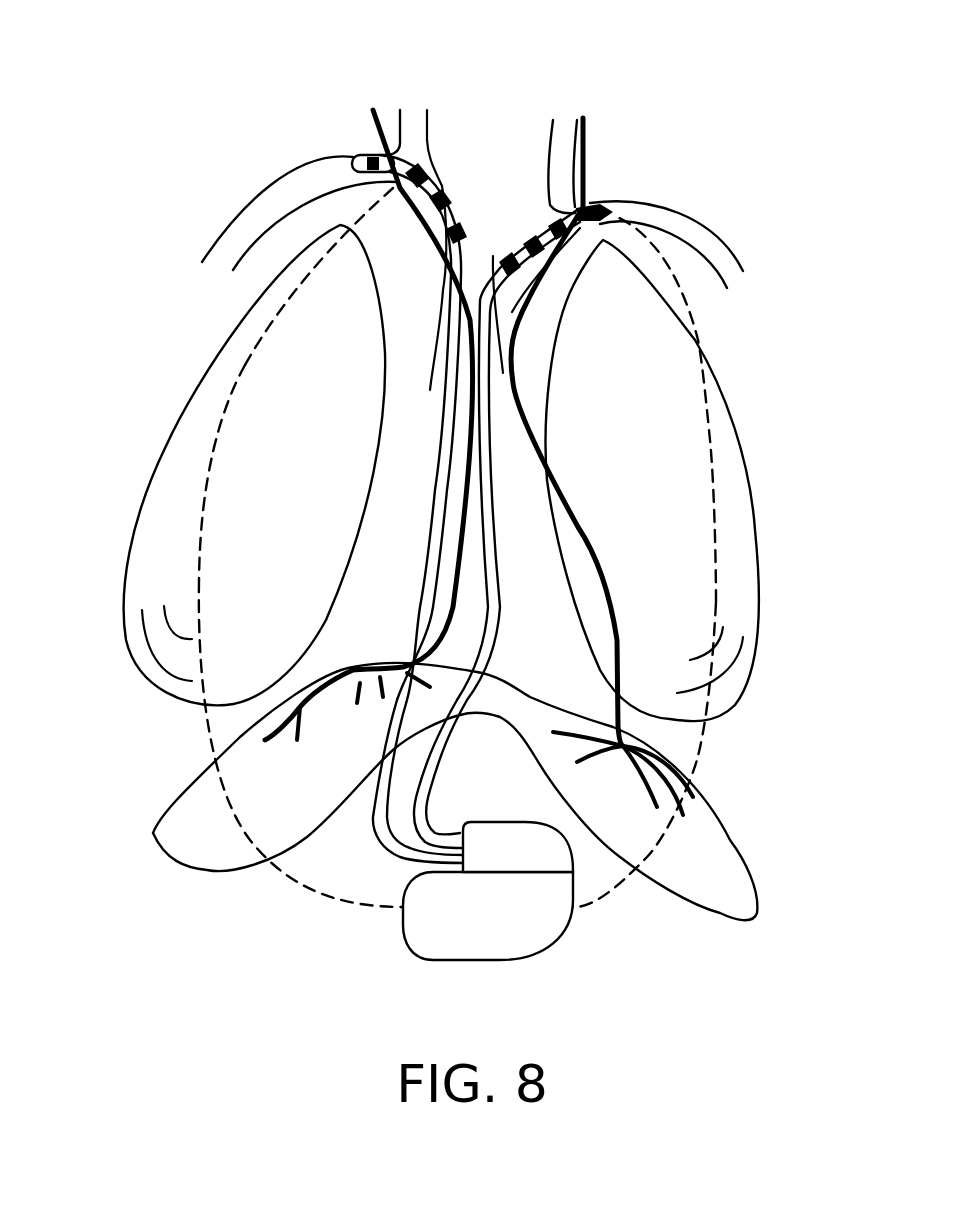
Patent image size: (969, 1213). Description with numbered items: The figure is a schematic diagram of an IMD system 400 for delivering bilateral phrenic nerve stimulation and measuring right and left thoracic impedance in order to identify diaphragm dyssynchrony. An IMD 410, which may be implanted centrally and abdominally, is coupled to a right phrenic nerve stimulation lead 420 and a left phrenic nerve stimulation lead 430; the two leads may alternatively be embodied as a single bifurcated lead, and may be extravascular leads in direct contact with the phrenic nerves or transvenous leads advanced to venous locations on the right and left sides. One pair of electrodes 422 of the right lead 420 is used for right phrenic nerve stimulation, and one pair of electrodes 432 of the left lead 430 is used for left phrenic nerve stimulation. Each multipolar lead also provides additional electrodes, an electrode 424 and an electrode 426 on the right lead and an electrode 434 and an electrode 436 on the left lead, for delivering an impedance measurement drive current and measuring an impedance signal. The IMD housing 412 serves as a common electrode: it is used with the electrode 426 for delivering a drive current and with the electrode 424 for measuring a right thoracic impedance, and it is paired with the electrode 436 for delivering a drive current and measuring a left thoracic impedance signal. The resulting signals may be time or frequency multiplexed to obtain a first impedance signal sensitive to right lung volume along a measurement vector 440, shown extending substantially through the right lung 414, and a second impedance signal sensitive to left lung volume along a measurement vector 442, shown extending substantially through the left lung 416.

The IMD system 400 is at (469, 27).
The IMD 410 is at (491, 916).
The IMD housing 412 is at (401, 908).
The right lung 414 is at (168, 445).
The left lung 416 is at (760, 577).
The right phrenic nerve stimulation lead 420 is at (420, 567).
The pair of electrodes 422 is at (493, 256).
The electrode 424 is at (375, 152).
The electrode 426 is at (428, 172).
The left phrenic nerve stimulation lead 430 is at (495, 658).
The pair of electrodes 432 is at (502, 258).
The electrode 434 is at (608, 242).
The electrode 436 is at (603, 242).
The measurement vector 440 is at (199, 578).
The measurement vector 442 is at (710, 446).